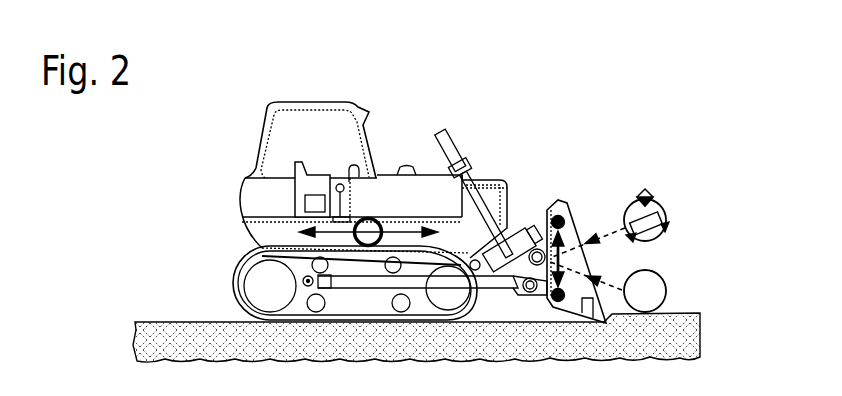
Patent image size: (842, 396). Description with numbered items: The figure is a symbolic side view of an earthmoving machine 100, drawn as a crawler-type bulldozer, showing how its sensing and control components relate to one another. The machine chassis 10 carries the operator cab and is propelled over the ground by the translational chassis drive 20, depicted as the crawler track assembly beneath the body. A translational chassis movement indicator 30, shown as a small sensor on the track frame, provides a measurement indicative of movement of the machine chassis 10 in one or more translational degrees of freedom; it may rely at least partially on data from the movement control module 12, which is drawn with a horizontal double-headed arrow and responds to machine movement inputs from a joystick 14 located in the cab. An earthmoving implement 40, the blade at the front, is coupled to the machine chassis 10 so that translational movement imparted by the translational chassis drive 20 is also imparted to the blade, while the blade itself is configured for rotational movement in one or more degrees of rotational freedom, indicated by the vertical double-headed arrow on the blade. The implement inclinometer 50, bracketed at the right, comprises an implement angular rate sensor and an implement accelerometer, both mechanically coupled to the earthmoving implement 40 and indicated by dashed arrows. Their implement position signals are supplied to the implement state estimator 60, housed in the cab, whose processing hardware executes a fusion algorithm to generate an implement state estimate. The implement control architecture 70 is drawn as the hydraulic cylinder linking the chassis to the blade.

The earthmoving machine 100 is at (256, 59).
The machine chassis 10 is at (262, 138).
The movement control module 12 is at (339, 233).
The joystick 14 is at (462, 188).
The translational chassis drive 20 is at (237, 281).
The translational chassis movement indicator 30 is at (325, 288).
The earthmoving implement 40 is at (565, 310).
The implement inclinometer 50 is at (678, 203).
The implement state estimator 60 is at (305, 202).
The implement control architecture 70 is at (466, 163).